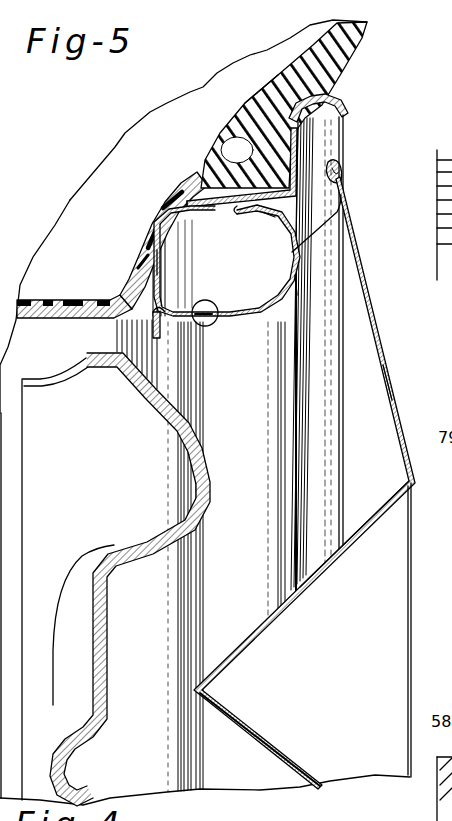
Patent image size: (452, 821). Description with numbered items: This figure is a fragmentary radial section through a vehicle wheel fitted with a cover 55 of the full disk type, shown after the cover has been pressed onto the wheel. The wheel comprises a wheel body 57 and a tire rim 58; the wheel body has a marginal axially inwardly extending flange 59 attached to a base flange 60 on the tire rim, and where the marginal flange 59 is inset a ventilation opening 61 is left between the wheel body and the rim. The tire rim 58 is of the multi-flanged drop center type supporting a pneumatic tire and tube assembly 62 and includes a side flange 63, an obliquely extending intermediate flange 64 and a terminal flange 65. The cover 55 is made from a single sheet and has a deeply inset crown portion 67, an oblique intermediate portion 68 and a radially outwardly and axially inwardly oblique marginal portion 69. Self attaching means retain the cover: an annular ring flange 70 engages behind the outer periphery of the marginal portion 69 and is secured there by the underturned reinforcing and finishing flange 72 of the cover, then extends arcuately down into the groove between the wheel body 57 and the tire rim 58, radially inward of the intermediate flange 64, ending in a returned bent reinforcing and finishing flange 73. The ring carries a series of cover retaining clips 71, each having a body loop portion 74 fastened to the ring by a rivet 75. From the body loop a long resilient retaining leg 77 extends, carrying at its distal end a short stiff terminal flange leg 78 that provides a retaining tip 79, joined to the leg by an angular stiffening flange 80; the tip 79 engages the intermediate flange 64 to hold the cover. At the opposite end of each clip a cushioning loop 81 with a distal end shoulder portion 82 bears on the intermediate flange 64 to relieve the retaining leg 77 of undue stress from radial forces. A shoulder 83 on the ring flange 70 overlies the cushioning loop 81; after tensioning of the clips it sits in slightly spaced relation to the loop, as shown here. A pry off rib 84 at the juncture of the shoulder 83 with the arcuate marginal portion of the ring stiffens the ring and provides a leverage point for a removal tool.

The cover 55 is at (400, 411).
The wheel body 57 is at (207, 483).
The tire rim 58 is at (62, 332).
The marginal flange 59 is at (45, 546).
The base flange 60 is at (50, 310).
The ventilation openings 61 is at (90, 345).
The pneumatic tire and tube assembly 62 is at (363, 50).
The side flange 63 is at (148, 262).
The intermediate flange 64 is at (228, 133).
The terminal flange 65 is at (312, 112).
The crown portion 67 is at (297, 768).
The intermediate portion 68 is at (360, 545).
The marginal portion 69 is at (390, 373).
The ring flange 70 is at (247, 408).
The cover retaining clips 71 is at (168, 295).
The reinforcing and finishing flange 72 is at (331, 163).
The reinforcing and finishing flange 73 is at (160, 340).
The body loop portion 74 is at (230, 308).
The rivet 75 is at (205, 327).
The retaining leg 77 is at (160, 263).
The terminal flange leg 78 is at (217, 208).
The retaining tip 79 is at (180, 188).
The stiffening flange 80 is at (172, 208).
The cushioning loop 81 is at (277, 216).
The distal end shoulder portion 82 is at (252, 212).
The shoulder 83 is at (295, 275).
The pry off rib 84 is at (293, 258).